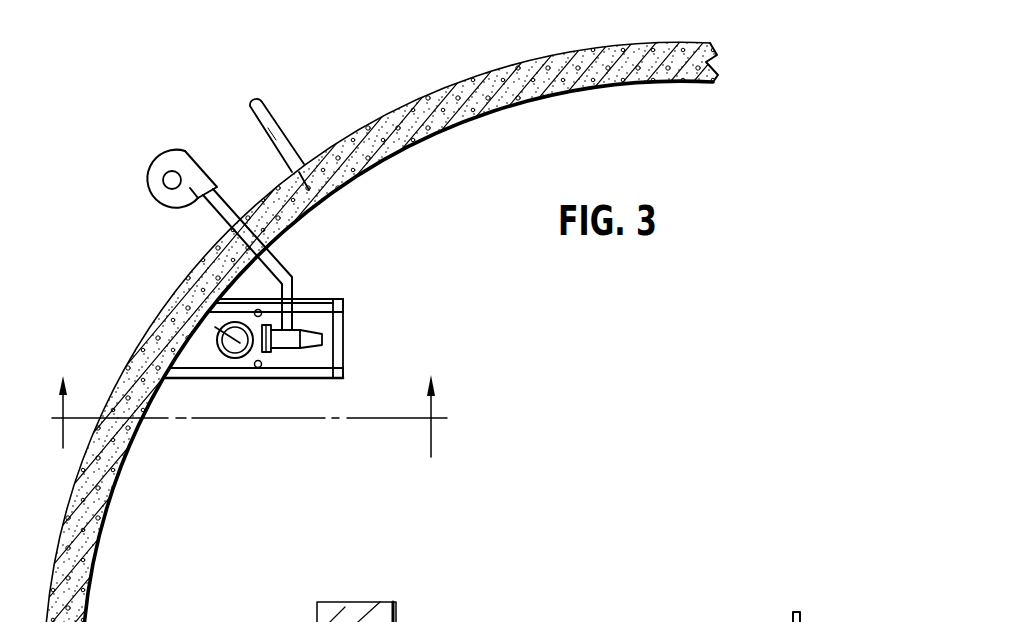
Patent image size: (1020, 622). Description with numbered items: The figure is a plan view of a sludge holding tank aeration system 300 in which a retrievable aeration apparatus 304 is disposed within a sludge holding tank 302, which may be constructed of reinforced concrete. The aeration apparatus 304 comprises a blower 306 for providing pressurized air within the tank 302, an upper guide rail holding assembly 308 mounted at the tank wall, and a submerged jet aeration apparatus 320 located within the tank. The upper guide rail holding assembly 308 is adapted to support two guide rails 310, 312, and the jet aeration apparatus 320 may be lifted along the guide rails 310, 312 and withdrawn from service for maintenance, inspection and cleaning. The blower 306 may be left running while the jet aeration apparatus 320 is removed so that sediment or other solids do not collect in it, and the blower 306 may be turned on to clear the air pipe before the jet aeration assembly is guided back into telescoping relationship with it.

The sludge holding tank aeration system 300 is at (409, 91).
The sludge holding tank 302 is at (553, 57).
The retrievable aeration apparatus 304 is at (322, 300).
The blower 306 is at (147, 172).
The upper guide rail holding assembly 308 is at (344, 303).
The guide rail 310 is at (258, 368).
The guide rail 312 is at (257, 309).
The submerged jet aeration apparatus 320 is at (220, 344).